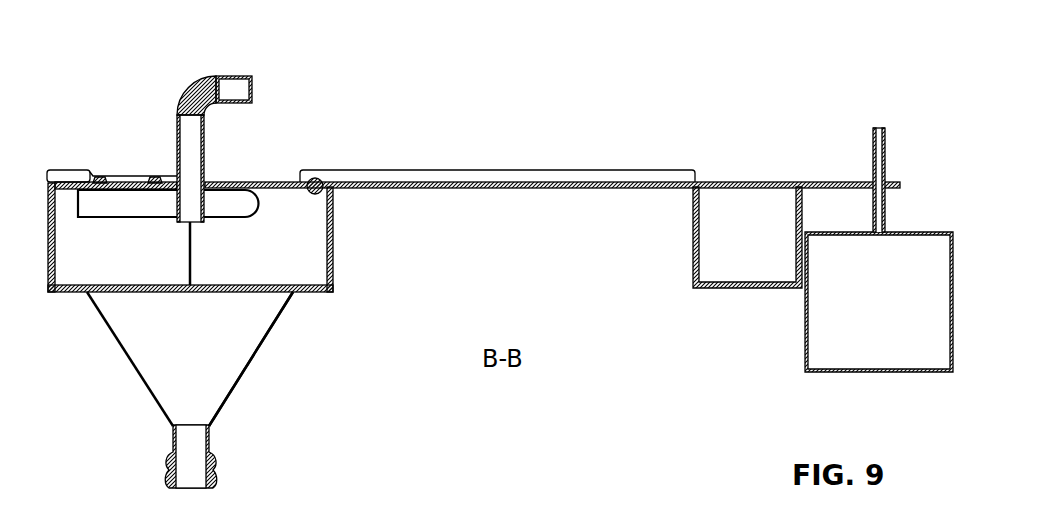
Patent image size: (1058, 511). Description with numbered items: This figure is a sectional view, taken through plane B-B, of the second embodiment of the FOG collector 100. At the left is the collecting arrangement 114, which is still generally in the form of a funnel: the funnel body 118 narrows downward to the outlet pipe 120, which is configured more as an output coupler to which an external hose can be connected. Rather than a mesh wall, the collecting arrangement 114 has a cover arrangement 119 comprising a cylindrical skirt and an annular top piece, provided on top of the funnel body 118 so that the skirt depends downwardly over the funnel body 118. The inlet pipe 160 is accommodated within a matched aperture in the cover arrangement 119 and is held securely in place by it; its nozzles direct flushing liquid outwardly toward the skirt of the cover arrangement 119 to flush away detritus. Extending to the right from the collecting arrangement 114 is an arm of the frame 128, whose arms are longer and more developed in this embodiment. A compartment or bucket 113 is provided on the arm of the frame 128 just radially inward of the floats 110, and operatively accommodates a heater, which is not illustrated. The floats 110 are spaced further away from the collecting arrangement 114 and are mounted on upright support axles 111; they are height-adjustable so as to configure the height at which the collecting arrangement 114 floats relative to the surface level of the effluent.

The FOG collector 100 is at (499, 256).
The floats 110 is at (930, 373).
The upright support axle 111 is at (885, 207).
The compartment or bucket 113 is at (748, 289).
The collecting arrangement 114 is at (292, 320).
The funnel body 118 is at (210, 356).
The cover arrangement 119 is at (285, 266).
The outlet pipe 120 is at (208, 445).
The frame 128 is at (512, 188).
The inlet pipe 160 is at (231, 76).